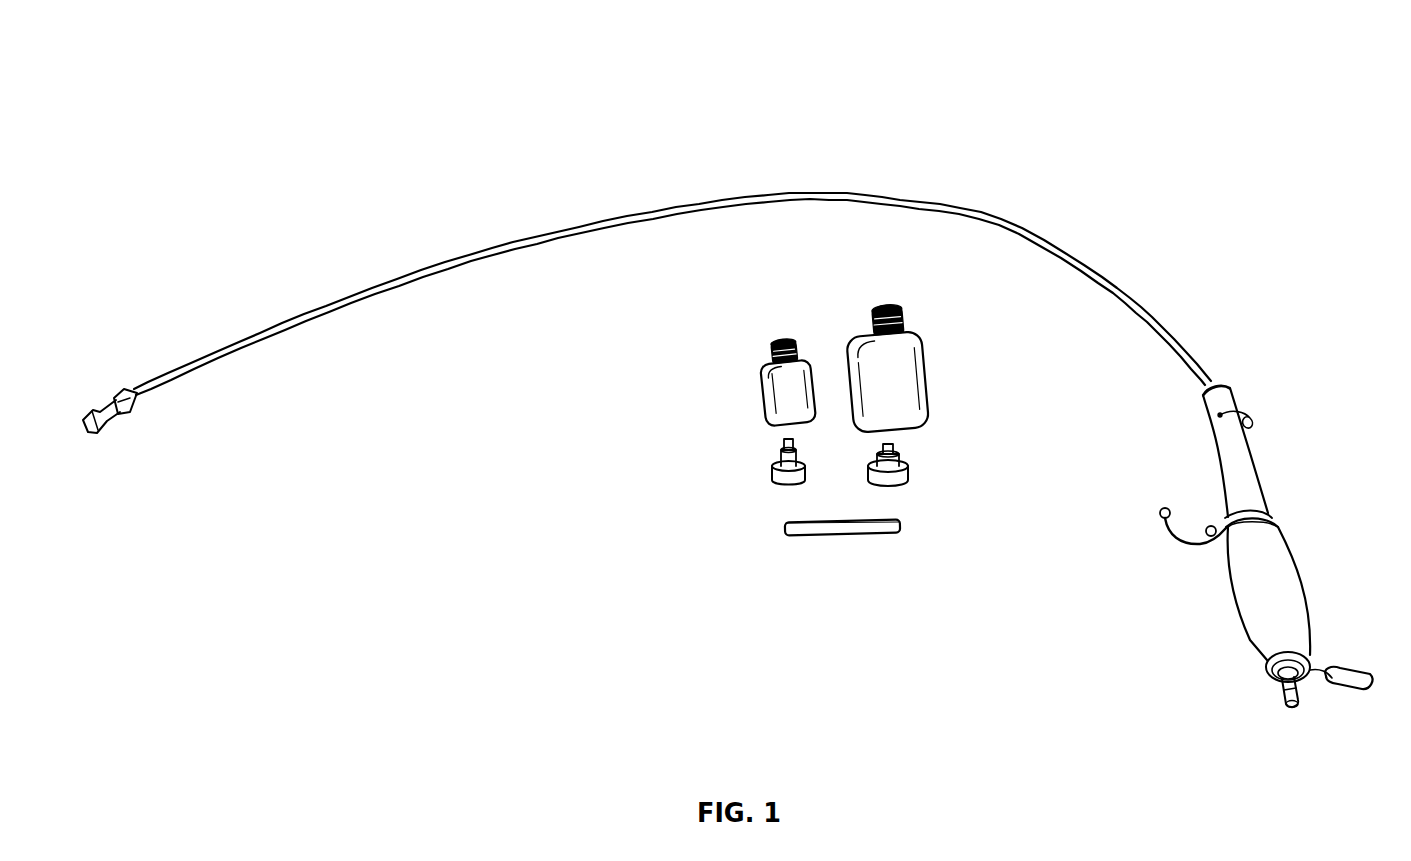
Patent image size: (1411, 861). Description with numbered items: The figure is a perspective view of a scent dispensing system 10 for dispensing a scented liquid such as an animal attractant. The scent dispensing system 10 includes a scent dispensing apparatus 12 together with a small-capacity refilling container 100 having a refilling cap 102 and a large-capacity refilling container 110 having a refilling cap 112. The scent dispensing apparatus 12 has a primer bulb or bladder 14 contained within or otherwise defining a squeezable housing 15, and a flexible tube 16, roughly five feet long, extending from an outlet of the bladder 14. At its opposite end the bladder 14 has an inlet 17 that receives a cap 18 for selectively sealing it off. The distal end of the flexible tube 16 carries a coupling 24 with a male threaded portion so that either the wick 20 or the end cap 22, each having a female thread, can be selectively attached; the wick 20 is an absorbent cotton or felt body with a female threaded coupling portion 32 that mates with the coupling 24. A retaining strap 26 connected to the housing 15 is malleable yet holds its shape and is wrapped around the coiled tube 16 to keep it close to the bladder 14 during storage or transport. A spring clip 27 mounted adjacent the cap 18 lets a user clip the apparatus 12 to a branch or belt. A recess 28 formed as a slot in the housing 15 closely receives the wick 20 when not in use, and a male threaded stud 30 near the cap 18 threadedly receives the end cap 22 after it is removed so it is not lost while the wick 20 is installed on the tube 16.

The scent dispensing system 10 is at (878, 68).
The scent dispensing apparatus 12 is at (1184, 568).
The primer bulb or bladder 14 is at (1290, 550).
The squeezable housing 15 is at (1263, 478).
The flexible tube 16 is at (710, 197).
The inlet 17 is at (1278, 700).
The cap 18 is at (1292, 708).
The wick 20 is at (830, 537).
The end cap 22 is at (92, 410).
The coupling 24 is at (128, 392).
The retaining strap 26 is at (1160, 540).
The spring clip 27 is at (1350, 672).
The recess 28 is at (1218, 380).
The male threaded stud 30 is at (1264, 680).
The female threaded coupling portion 32 is at (902, 527).
The small-capacity refilling container 100 is at (765, 375).
The refilling cap 102 is at (772, 475).
The large-capacity refilling container 110 is at (925, 352).
The refilling cap 112 is at (912, 462).